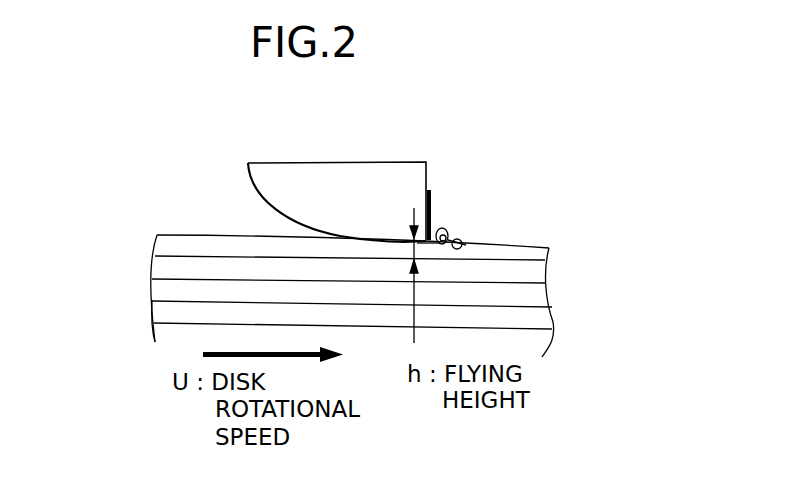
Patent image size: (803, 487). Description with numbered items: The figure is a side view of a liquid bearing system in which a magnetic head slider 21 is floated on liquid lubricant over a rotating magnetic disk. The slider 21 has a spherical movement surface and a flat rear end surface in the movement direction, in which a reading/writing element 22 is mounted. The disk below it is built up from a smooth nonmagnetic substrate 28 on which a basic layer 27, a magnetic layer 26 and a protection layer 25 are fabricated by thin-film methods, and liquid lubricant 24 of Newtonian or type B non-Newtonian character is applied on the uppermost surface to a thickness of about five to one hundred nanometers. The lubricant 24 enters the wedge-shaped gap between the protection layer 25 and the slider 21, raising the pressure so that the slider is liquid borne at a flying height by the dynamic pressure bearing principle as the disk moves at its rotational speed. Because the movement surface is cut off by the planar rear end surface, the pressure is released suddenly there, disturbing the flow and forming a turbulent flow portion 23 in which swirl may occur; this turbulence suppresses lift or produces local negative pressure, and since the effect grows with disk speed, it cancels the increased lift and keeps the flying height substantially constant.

The magnetic head slider 21 is at (266, 173).
The reading/writing element 22 is at (430, 198).
The turbulent flow portion 23 is at (457, 237).
The liquid lubricant 24 is at (158, 238).
The protection layer 25 is at (155, 266).
The magnetic layer 26 is at (155, 294).
The basic layer 27 is at (158, 322).
The nonmagnetic substrate 28 is at (154, 341).